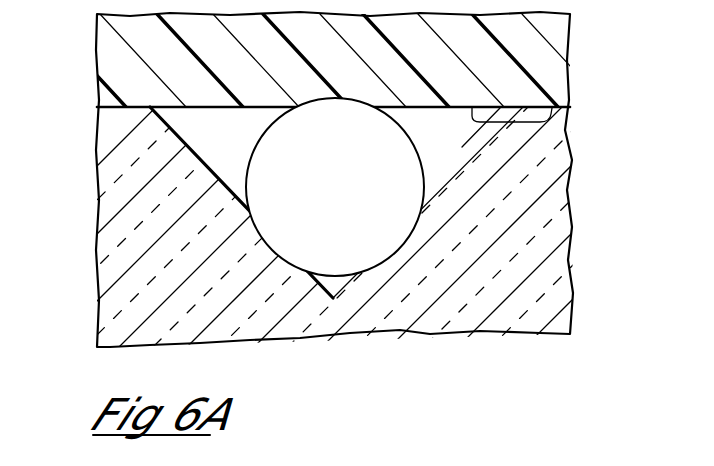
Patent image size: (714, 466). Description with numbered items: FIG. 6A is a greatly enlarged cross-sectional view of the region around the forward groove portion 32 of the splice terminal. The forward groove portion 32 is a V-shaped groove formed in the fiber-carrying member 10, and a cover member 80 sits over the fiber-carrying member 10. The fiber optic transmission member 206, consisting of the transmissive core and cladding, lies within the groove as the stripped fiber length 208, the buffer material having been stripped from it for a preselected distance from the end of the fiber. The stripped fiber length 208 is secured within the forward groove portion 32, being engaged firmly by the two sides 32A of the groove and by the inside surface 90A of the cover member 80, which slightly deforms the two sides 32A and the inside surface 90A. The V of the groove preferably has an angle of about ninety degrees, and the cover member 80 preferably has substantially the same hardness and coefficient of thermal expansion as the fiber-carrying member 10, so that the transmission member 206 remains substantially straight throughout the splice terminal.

The fiber-carrying member 10 is at (147, 350).
The cover member 80 is at (370, 67).
The forward groove portion 32 is at (208, 132).
The sides 32A is at (206, 163).
The inside surface 90A is at (561, 112).
The fiber optic transmission member 206 is at (358, 203).
The stripped fiber length 208 is at (423, 185).